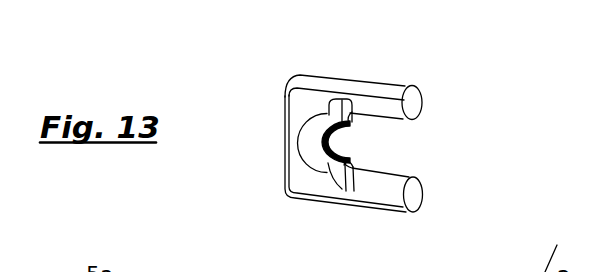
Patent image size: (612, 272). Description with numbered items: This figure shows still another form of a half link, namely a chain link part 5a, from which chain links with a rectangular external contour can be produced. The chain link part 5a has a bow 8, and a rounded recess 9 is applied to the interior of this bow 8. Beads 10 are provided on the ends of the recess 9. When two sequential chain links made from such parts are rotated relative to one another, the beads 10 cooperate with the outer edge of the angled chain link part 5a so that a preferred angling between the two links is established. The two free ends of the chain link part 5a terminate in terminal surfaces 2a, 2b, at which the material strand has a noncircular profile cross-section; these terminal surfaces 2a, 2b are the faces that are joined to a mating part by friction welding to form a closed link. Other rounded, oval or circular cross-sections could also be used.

The terminal surface 2a is at (410, 100).
The terminal surface 2b is at (412, 188).
The chain link part 5a is at (332, 82).
The bow 8 is at (284, 148).
The rounded recess 9 is at (313, 153).
The bead 10 is at (344, 166).